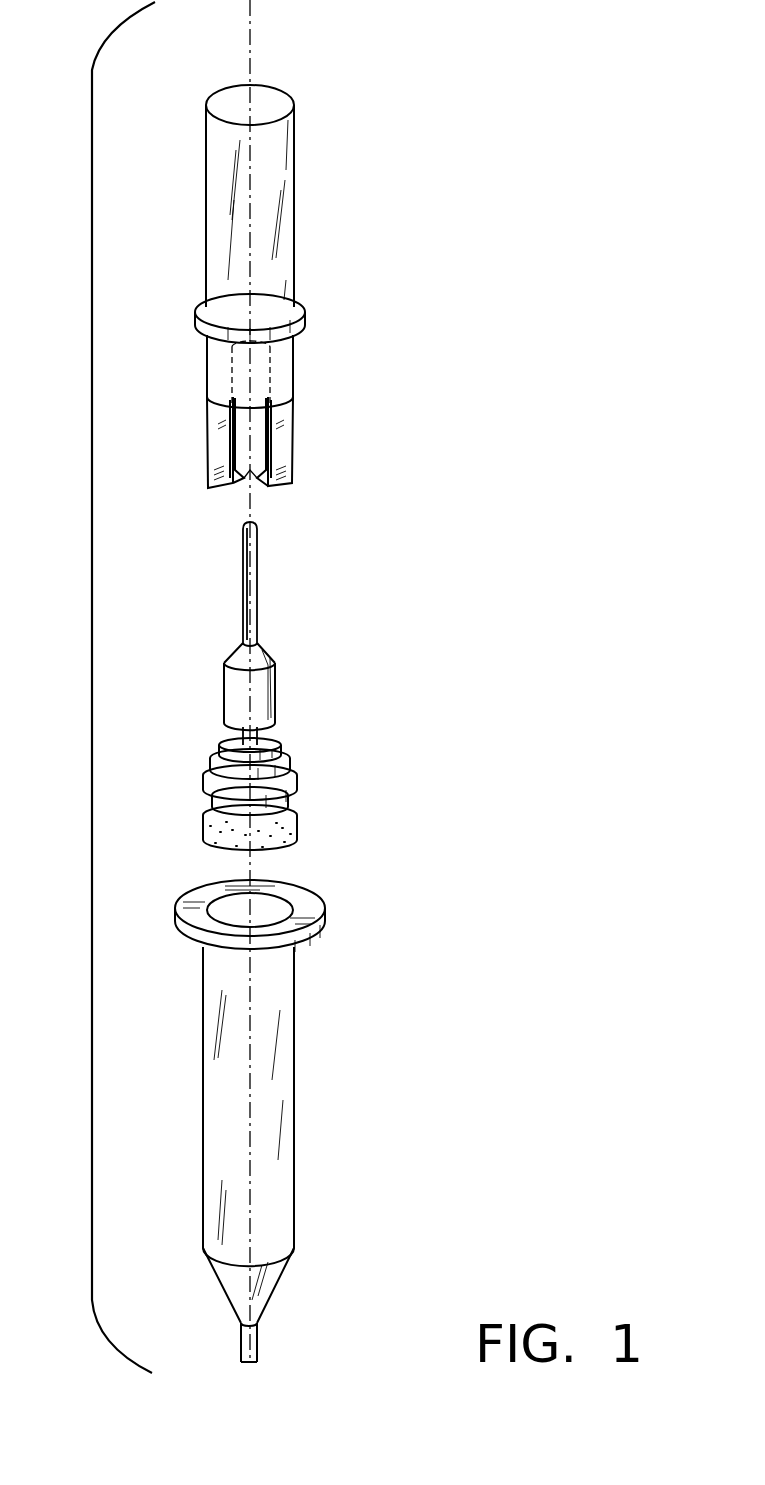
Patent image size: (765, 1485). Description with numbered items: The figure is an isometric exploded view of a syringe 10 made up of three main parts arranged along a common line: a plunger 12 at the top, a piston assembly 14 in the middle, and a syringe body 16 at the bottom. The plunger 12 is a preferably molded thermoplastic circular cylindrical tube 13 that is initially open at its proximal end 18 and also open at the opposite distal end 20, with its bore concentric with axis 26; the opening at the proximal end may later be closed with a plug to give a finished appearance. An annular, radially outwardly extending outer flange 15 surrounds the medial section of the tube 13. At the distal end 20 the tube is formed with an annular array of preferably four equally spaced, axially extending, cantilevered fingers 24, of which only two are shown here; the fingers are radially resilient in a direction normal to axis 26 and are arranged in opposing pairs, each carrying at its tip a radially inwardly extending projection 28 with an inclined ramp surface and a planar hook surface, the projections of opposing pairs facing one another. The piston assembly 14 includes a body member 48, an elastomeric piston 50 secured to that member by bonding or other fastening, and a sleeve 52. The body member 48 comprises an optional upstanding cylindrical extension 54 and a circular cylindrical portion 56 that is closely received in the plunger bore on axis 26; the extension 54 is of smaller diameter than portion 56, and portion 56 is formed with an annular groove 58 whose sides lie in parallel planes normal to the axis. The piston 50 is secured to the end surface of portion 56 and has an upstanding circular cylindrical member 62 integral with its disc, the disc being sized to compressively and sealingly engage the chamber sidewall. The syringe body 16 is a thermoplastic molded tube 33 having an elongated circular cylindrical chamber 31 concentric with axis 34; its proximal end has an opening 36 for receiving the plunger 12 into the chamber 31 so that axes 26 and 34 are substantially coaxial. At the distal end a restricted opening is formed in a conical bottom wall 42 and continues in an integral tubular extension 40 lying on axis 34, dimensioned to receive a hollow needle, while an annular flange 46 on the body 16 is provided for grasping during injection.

The syringe 10 is at (92, 755).
The plunger 12 is at (281, 284).
The tube 13 is at (294, 150).
The piston assembly 14 is at (318, 690).
The outer flange 15 is at (296, 305).
The syringe body 16 is at (300, 1100).
The proximal end 18 is at (268, 102).
The distal end 20 is at (258, 484).
The fingers 24 is at (208, 437).
The axis 26 is at (255, 33).
The projection 28 is at (213, 480).
The chamber 31 is at (218, 915).
The tube 33 is at (283, 1040).
The axis 34 is at (250, 985).
The opening 36 is at (272, 915).
The tubular extension 40 is at (255, 1353).
The conical bottom wall 42 is at (270, 1283).
The annular flange 46 is at (318, 918).
The body member 48 is at (296, 637).
The elastomeric piston 50 is at (300, 832).
The sleeve 52 is at (290, 755).
The cylindrical extension 54 is at (243, 552).
The circular cylindrical portion 56 is at (228, 693).
The annular groove 58 is at (233, 740).
The circular cylindrical member 62 is at (213, 805).